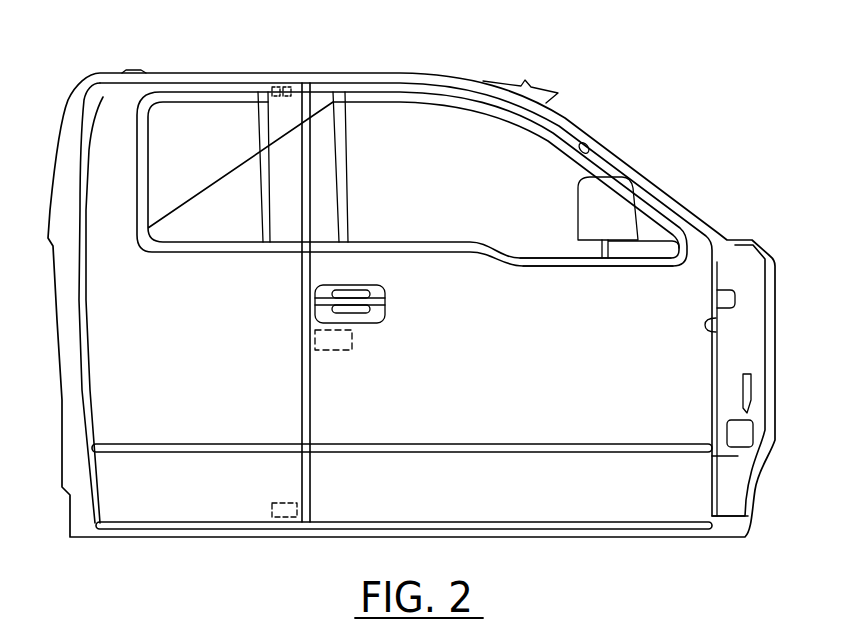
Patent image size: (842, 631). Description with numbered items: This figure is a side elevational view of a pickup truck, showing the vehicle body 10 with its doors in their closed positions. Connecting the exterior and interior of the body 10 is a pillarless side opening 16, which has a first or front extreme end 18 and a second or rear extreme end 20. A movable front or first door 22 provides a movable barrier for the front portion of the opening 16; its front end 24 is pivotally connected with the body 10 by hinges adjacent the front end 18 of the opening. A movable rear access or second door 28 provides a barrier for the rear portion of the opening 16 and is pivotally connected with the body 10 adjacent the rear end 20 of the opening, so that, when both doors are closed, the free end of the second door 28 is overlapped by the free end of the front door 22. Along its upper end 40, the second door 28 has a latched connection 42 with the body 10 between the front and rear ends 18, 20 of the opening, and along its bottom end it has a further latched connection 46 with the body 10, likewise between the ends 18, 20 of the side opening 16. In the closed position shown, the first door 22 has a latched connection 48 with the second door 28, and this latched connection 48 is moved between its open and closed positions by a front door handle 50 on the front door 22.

The body 10 is at (722, 230).
The pillarless side opening 16 is at (589, 143).
The front extreme end 18 is at (730, 326).
The rear extreme end 20 is at (90, 356).
The front door 22 is at (628, 283).
The front end 24 is at (703, 362).
The rear access door 28 is at (173, 428).
The upper end 40 is at (219, 86).
The latched connection 42 is at (284, 82).
The latched connection 46 is at (282, 500).
The latched connection 48 is at (350, 343).
The front door handle 50 is at (365, 293).